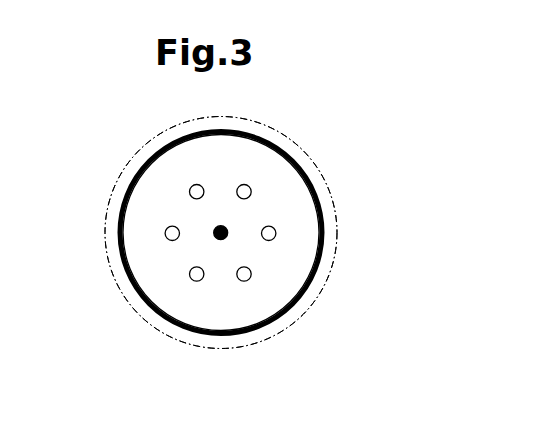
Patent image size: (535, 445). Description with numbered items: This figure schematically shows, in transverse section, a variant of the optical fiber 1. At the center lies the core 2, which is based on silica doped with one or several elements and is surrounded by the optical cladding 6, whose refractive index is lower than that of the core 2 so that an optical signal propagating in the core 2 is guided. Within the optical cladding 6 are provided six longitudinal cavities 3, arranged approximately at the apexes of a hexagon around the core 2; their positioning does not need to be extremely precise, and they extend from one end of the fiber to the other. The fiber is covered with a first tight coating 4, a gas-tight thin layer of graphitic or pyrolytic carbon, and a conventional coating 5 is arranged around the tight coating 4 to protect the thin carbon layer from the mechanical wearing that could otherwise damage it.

The optical fiber 1 is at (97, 168).
The core 2 is at (222, 243).
The longitudinal cavities 3 is at (190, 181).
The tight coating 4 is at (284, 316).
The conventional coating 5 is at (104, 243).
The optical cladding 6 is at (250, 157).